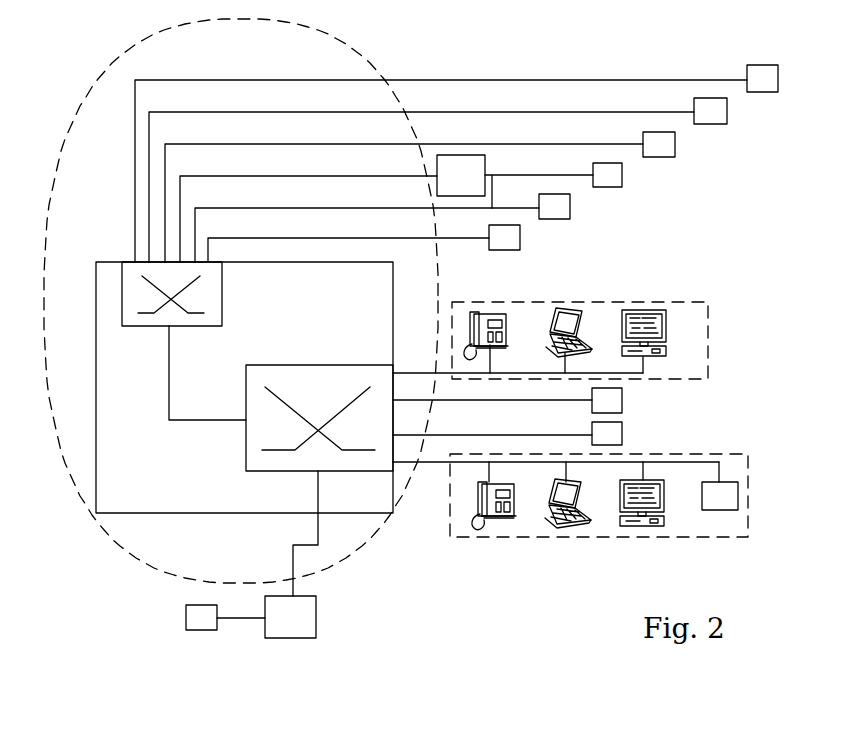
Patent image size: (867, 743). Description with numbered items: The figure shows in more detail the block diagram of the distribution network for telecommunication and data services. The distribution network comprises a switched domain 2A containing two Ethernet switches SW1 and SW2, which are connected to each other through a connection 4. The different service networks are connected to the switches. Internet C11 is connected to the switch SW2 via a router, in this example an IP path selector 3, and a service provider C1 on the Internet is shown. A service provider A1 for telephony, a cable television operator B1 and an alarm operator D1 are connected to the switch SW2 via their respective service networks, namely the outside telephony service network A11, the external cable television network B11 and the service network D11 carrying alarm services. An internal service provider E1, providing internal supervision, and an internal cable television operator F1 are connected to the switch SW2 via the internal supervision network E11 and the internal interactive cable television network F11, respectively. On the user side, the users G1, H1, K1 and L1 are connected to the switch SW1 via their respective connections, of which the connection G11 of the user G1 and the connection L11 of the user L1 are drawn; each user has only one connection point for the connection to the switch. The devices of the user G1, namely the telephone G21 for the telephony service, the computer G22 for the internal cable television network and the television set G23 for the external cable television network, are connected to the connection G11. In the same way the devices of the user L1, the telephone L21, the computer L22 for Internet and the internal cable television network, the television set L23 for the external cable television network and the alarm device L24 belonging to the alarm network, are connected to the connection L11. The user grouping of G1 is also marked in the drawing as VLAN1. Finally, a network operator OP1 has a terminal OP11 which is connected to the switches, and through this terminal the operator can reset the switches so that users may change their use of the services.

The switched domain 2A is at (367, 552).
The IP path selector 3 is at (460, 155).
The connection 4 is at (169, 377).
The Ethernet switch SW1 is at (246, 453).
The Ethernet switch SW2 is at (222, 297).
The Internet C11 is at (241, 176).
The service network carrying alarm services D11 is at (508, 145).
The internal supervision network E11 is at (563, 112).
The internal interactive cable television network F11 is at (615, 80).
The external cable television network B11 is at (463, 212).
The outside service network for telephony A11 is at (475, 238).
The service provider for telephony A1 is at (520, 238).
The cable television operator B1 is at (570, 208).
The service provider on Internet C1 is at (622, 175).
The alarm operator D1 is at (675, 144).
The internal service provider E1 is at (727, 112).
The internal cable television operator F1 is at (778, 80).
The connection G11 is at (418, 373).
The user G1 is at (712, 340).
The telephone G21 is at (503, 313).
The computer G22 is at (573, 317).
The television set G23 is at (647, 310).
The virtual LAN VLAN1 is at (635, 378).
The user H1 is at (622, 400).
The user K1 is at (622, 434).
The connection L11 is at (678, 460).
The user L1 is at (713, 452).
The telephone L21 is at (492, 520).
The computer L22 is at (558, 523).
The television set L23 is at (645, 527).
The alarm device L24 is at (725, 510).
The network operator OP1 is at (186, 617).
The terminal OP11 is at (316, 617).